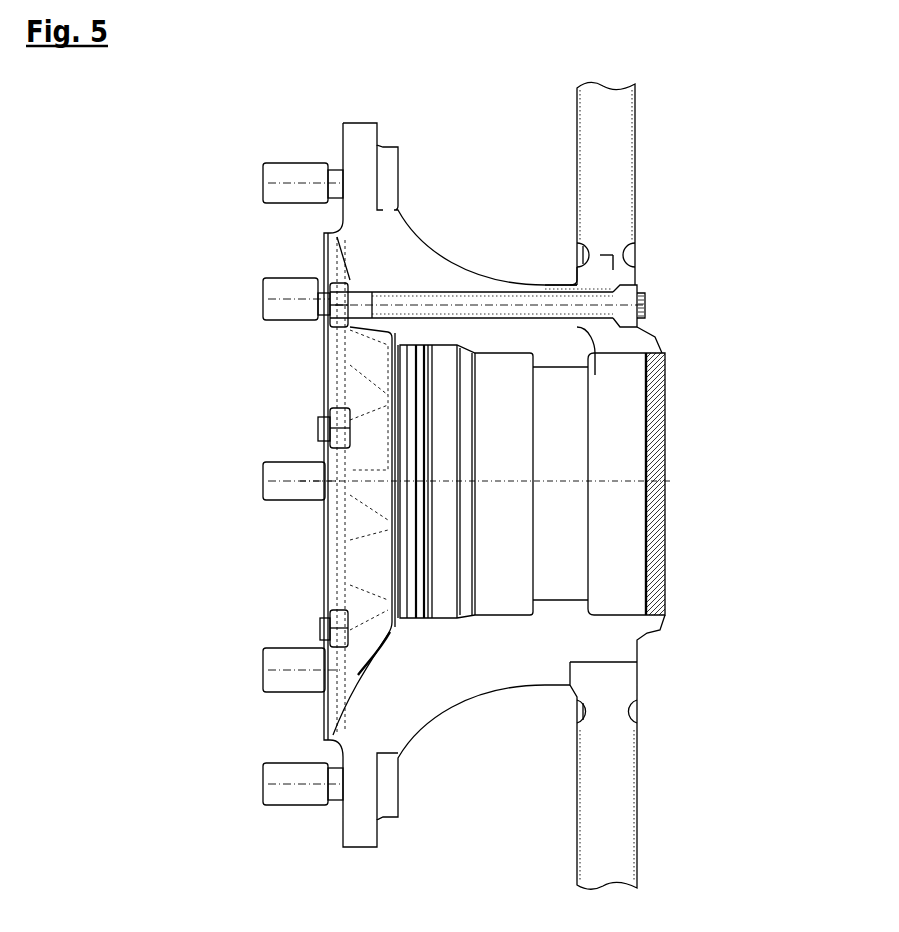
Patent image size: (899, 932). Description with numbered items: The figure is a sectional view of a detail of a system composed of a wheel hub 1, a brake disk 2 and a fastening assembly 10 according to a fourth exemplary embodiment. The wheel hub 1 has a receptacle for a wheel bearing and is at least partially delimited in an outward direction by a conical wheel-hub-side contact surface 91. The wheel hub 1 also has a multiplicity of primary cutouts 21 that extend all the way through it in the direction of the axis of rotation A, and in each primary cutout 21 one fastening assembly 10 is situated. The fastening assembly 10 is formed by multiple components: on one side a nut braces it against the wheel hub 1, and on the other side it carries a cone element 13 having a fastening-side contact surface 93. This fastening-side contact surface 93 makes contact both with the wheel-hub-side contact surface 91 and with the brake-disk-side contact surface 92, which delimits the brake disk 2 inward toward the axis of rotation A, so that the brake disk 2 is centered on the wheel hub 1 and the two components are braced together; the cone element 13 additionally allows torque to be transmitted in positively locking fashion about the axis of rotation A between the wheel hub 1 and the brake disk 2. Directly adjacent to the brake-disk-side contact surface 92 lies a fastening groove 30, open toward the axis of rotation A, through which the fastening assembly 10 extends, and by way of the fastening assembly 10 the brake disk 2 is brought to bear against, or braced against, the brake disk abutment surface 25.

The wheel hub 1 is at (627, 442).
The brake disk 2 is at (657, 795).
The fastening assembly 10 is at (470, 300).
The cone element 13 is at (623, 293).
The primary cutout 21 is at (462, 317).
The brake disk abutment surface 25 is at (573, 290).
The fastening groove 30 is at (592, 290).
The wheel-hub-side contact surface 91 is at (605, 357).
The brake-disk-side contact surface 92 is at (614, 262).
The fastening-side contact surface 93 is at (604, 315).
The axis of rotation A is at (617, 485).